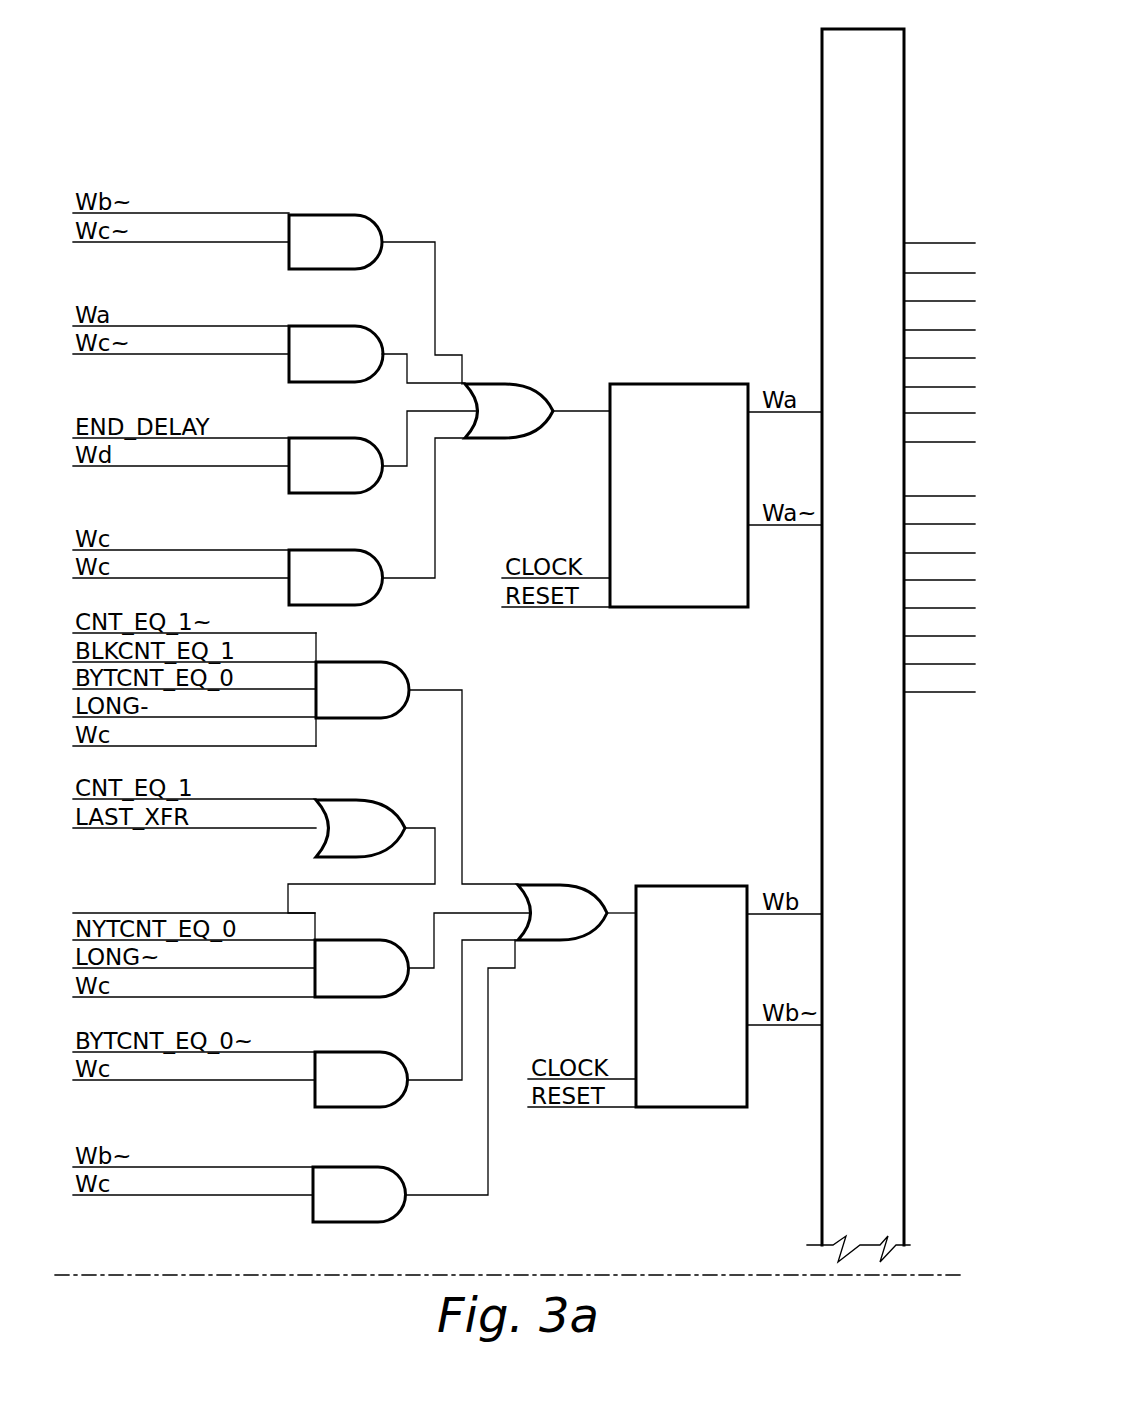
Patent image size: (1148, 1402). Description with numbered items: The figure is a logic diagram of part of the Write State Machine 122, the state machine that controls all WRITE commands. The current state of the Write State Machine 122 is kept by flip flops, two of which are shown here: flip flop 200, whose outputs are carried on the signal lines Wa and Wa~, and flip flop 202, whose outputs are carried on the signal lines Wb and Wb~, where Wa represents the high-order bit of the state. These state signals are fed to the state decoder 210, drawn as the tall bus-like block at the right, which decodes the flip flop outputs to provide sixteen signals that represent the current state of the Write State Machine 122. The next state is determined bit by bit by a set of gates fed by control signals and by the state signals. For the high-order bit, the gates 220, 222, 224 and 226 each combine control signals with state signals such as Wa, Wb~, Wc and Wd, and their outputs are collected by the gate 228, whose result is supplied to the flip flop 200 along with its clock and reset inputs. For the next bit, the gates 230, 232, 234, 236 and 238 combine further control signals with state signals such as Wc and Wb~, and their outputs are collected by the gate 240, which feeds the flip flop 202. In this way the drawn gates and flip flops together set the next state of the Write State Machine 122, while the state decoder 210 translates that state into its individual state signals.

The Write State Machine 122 is at (252, 95).
The flip flop 200 is at (640, 384).
The flip flop 202 is at (665, 886).
The state decoder 210 is at (822, 205).
The gate 220 is at (330, 215).
The gate 222 is at (311, 326).
The gate 224 is at (310, 438).
The gate 226 is at (311, 550).
The gate 228 is at (485, 384).
The gate 230 is at (358, 662).
The gate 232 is at (340, 800).
The gate 234 is at (325, 940).
The gate 236 is at (335, 1052).
The gate 238 is at (335, 1167).
The gate 240 is at (540, 885).